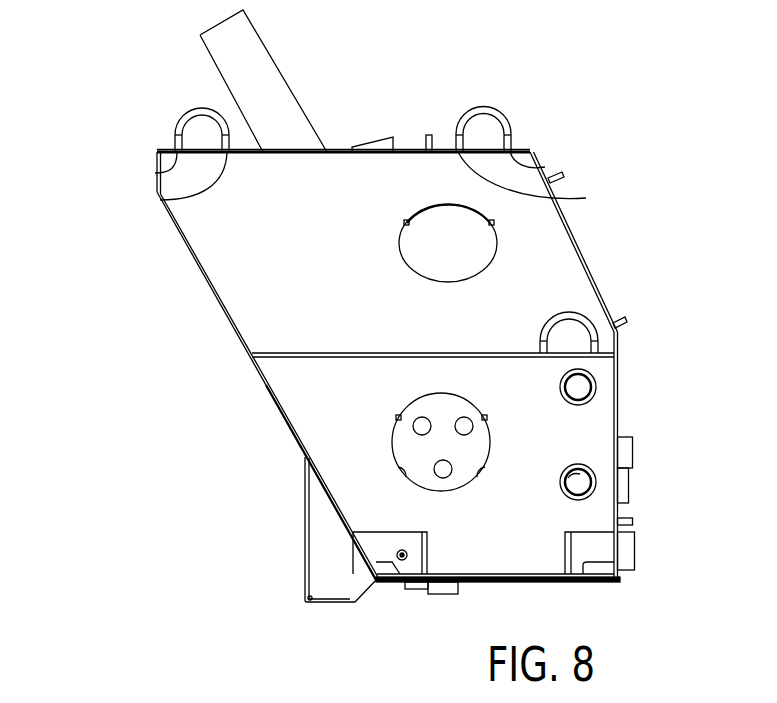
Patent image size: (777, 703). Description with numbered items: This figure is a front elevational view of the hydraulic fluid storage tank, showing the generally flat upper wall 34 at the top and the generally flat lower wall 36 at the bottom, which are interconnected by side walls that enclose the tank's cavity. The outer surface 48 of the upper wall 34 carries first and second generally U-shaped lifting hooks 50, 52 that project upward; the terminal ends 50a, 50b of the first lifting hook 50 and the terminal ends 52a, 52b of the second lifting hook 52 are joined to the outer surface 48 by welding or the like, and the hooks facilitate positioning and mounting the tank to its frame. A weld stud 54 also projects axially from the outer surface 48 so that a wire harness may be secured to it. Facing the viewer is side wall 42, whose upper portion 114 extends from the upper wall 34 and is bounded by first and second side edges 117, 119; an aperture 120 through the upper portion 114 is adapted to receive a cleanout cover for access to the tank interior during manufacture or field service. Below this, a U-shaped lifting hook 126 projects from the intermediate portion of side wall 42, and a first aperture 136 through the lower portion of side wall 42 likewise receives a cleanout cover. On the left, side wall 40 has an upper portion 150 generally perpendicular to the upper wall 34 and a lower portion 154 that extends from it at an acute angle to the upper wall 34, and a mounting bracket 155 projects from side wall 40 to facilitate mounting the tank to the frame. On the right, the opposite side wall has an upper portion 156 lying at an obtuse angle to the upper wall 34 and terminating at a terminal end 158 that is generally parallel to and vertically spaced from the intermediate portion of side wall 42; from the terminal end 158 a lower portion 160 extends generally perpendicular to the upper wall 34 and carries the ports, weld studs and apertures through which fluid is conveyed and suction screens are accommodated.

The upper wall 34 is at (334, 151).
The lower wall 36 is at (494, 578).
The side wall 40 is at (205, 314).
The side wall 42 is at (298, 264).
The outer surface 48 is at (447, 151).
The first lifting hook 50 is at (194, 98).
The terminal end 50a is at (160, 172).
The terminal end 50b is at (167, 200).
The second lifting hook 52 is at (491, 100).
The terminal end 52a is at (541, 182).
The terminal end 52b is at (545, 167).
The weld stud 54 is at (427, 140).
The upper portion 114 is at (220, 248).
The first side edge 117 is at (198, 272).
The second side edge 119 is at (586, 258).
The aperture 120 is at (414, 270).
The U-shaped lifting hook 126 is at (569, 312).
The first aperture 136 is at (395, 445).
The upper portion 150 is at (155, 180).
The lower portion 154 is at (277, 410).
The mounting bracket 155 is at (301, 607).
The upper portion 156 is at (573, 239).
The terminal end 158 is at (618, 333).
The lower portion 160 is at (617, 403).